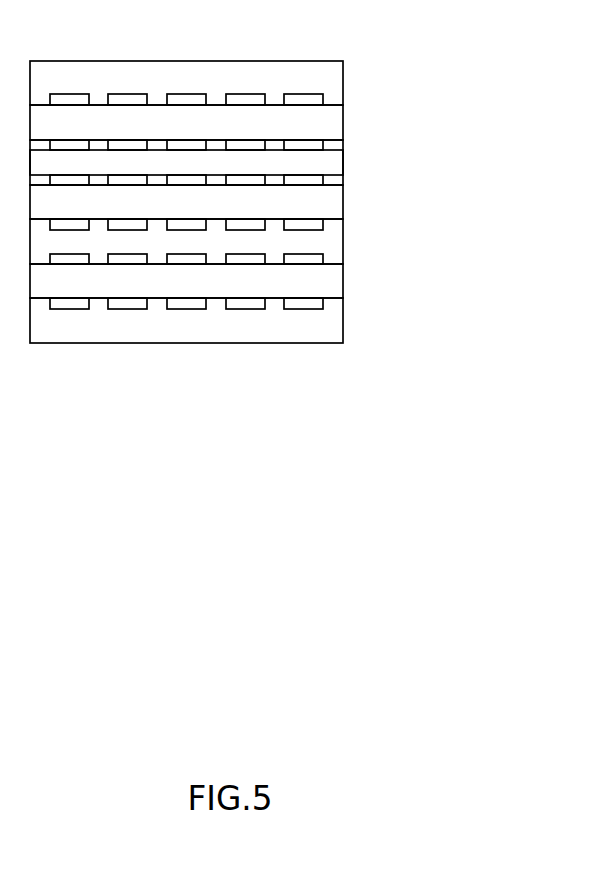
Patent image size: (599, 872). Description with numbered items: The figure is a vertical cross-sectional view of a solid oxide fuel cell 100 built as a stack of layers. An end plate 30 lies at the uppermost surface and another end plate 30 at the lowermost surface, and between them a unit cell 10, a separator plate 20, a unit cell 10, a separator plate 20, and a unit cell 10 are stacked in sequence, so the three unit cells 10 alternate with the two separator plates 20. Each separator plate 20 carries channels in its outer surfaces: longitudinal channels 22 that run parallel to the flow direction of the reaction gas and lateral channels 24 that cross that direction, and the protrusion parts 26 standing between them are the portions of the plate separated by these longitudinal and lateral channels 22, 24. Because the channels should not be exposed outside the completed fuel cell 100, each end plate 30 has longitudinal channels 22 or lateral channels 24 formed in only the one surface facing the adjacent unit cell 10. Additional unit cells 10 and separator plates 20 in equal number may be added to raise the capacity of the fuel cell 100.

The fuel cell 100 is at (75, 40).
The end plate 30 is at (334, 80).
The unit cell 10 is at (334, 120).
The separator plate 20 is at (334, 242).
The protrusion part 26 is at (275, 149).
The longitudinal channel 22 is at (315, 178).
The lateral channel 24 is at (269, 215).